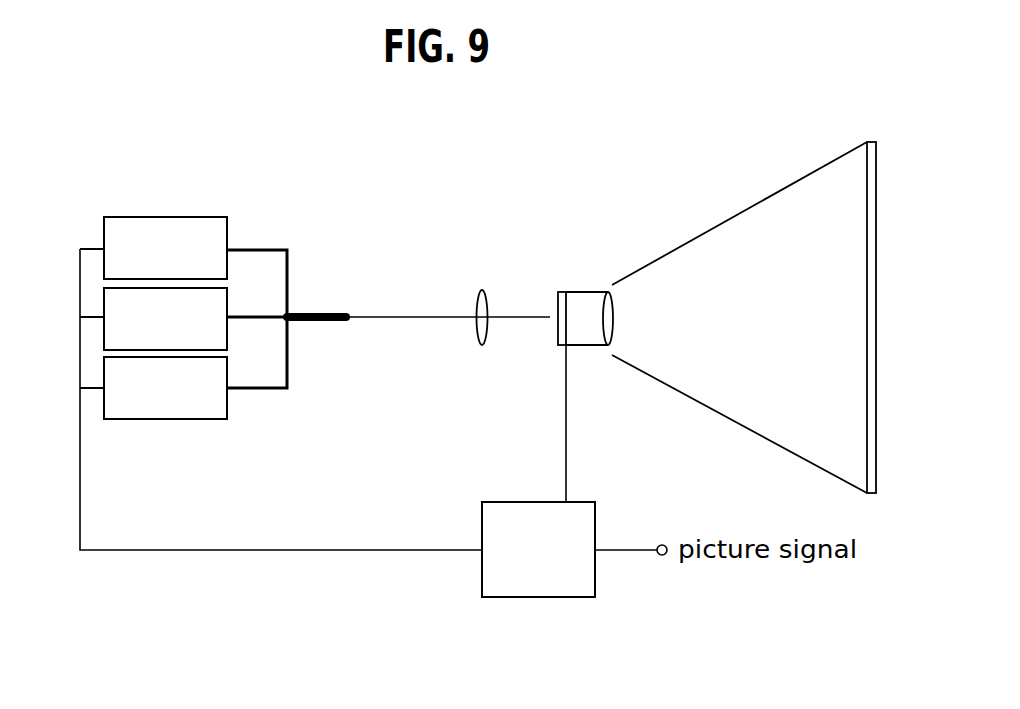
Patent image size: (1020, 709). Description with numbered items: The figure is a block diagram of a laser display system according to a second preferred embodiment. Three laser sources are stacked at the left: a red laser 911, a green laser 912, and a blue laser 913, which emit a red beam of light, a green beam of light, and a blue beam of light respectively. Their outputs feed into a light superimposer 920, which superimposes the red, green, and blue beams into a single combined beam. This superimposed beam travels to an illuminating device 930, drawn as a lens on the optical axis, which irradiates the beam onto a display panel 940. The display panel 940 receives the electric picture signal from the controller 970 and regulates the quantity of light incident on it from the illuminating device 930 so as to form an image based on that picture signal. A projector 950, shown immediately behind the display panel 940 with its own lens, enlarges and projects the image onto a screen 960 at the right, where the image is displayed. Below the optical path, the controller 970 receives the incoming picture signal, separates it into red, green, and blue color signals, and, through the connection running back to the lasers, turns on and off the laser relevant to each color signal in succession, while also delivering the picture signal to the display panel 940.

The red laser 911 is at (97, 243).
The green laser 912 is at (97, 313).
The blue laser 913 is at (97, 382).
The light superimposer 920 is at (277, 248).
The illuminating device 930 is at (480, 346).
The display panel 940 is at (560, 292).
The projector 950 is at (587, 338).
The screen 960 is at (867, 393).
The controller 970 is at (542, 583).